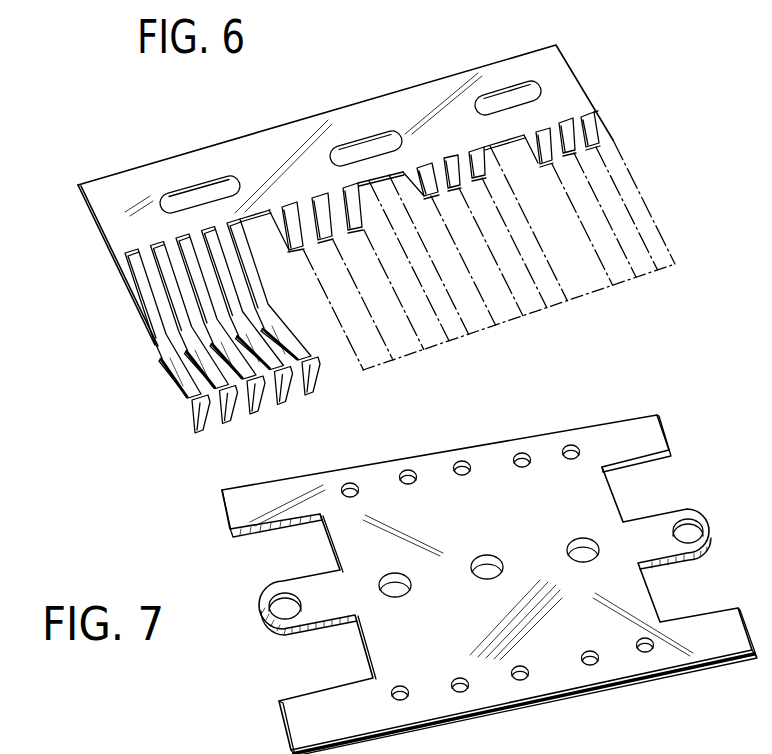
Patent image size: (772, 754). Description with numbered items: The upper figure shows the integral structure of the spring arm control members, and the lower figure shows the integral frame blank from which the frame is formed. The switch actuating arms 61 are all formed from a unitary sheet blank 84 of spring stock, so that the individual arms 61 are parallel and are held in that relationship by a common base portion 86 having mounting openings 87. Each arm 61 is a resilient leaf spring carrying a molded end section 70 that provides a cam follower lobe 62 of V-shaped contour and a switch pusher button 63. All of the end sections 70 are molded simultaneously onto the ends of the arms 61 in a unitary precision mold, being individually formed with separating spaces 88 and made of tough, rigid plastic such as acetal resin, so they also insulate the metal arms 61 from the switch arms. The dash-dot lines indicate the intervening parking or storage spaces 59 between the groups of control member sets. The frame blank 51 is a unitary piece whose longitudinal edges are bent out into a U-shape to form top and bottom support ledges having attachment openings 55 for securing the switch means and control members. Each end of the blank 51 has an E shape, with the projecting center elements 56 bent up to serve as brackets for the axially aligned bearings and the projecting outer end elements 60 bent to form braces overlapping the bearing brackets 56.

In FIG. 7, the unitary blank 51 is at (489, 453).
In FIG. 7, the attachment openings 55 is at (455, 466).
In FIG. 7, the projecting center elements 56 is at (305, 585).
In FIG. 6, the parking or storage spaces 59 is at (338, 359).
In FIG. 7, the projecting outer end elements 60 is at (245, 502).
In FIG. 6, the switch actuating arm 61 is at (132, 288).
In FIG. 6, the cam follower lobe 62 is at (156, 380).
In FIG. 6, the switch pusher button 63 is at (197, 431).
In FIG. 6, the molded end section 70 is at (196, 413).
In FIG. 6, the unitary sheet blank 84 is at (86, 220).
In FIG. 6, the common base portion 86 is at (310, 127).
In FIG. 6, the mounting openings 87 is at (217, 183).
In FIG. 6, the separating spaces 88 is at (240, 412).